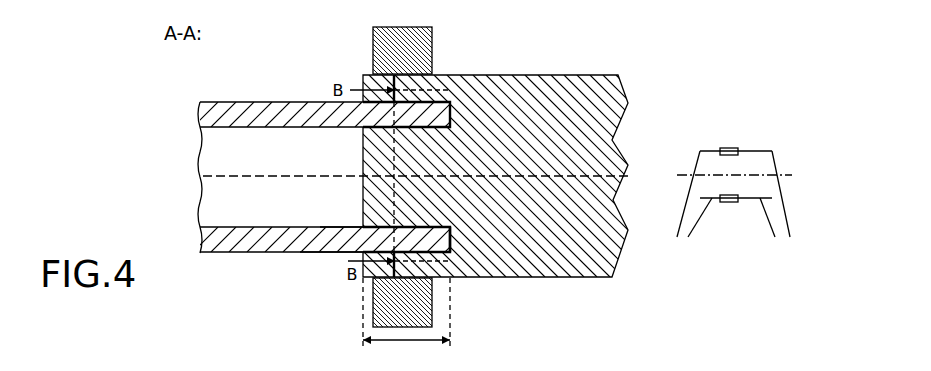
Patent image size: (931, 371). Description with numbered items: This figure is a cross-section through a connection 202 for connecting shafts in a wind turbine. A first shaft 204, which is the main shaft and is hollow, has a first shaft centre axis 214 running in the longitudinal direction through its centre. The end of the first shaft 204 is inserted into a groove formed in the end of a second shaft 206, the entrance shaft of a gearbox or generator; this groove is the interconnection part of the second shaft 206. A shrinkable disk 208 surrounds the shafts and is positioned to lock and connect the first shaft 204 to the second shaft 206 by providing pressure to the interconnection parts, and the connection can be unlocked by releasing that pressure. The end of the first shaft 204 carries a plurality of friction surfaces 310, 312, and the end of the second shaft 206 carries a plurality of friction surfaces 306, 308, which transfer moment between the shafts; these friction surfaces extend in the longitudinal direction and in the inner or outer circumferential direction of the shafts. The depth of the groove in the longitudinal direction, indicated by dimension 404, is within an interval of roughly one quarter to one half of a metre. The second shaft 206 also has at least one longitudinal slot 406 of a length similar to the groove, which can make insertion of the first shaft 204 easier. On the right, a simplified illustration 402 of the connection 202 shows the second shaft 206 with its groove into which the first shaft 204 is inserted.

The connection 202 is at (338, 300).
The first shaft 204 is at (282, 101).
The second shaft 206 is at (545, 77).
The shrinkable disk 208 is at (418, 50).
The first shaft centre axis 214 is at (203, 178).
The friction surface 306 is at (427, 230).
The friction surface 308 is at (427, 257).
The friction surface 310 is at (343, 227).
The friction surface 312 is at (335, 251).
The simplified illustration 402 is at (757, 131).
The groove width 404 is at (450, 348).
The longitudinal slot 406 is at (450, 88).